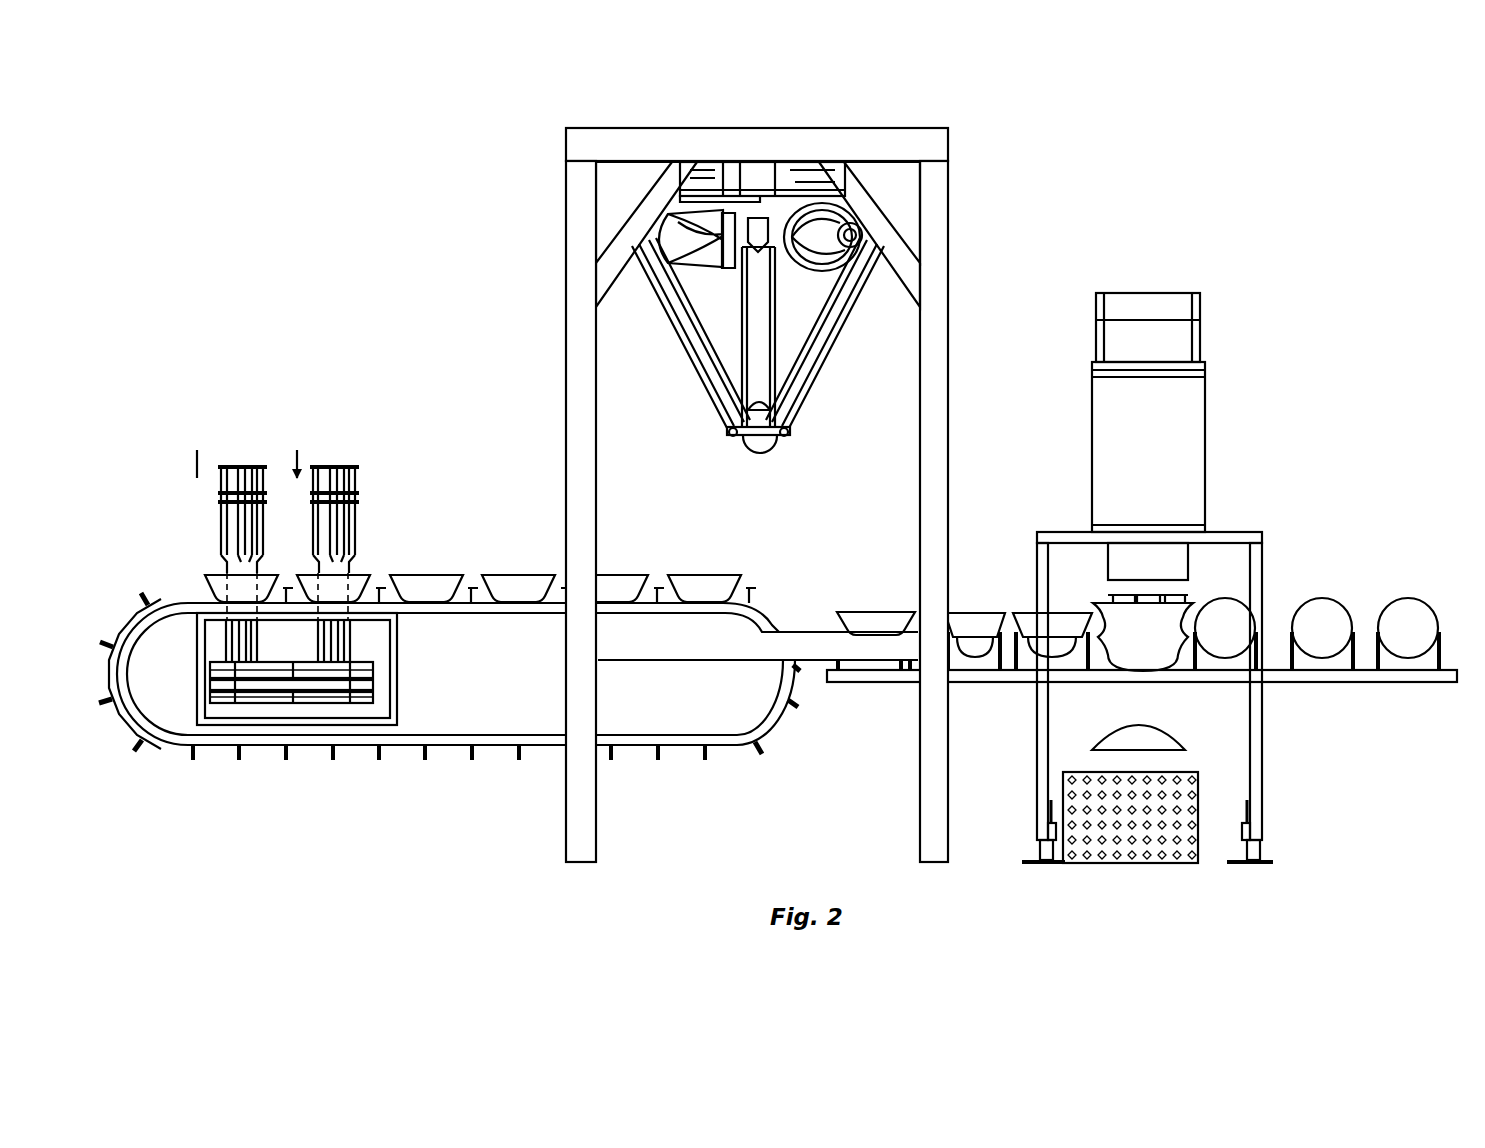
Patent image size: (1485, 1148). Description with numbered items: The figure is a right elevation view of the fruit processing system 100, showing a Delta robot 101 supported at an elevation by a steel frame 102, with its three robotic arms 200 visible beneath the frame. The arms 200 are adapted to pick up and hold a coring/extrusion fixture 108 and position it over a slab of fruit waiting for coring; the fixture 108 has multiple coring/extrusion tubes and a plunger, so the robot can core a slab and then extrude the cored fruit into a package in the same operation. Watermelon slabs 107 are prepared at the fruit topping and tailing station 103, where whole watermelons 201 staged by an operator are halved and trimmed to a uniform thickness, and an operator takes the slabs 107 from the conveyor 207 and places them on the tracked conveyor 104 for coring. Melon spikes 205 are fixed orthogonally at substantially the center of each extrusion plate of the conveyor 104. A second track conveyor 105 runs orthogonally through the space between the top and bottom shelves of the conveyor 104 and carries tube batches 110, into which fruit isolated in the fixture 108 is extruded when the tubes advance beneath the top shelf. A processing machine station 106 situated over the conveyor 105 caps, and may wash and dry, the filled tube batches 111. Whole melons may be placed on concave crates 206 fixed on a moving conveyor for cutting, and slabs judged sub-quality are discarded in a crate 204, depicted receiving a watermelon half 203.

The fruit processing system 100 is at (1086, 172).
The Delta robot 101 is at (769, 128).
The steel frame 102 is at (563, 296).
The fruit topping and tailing station 103 is at (1200, 388).
The tracked conveyor 104 is at (542, 748).
The second track conveyor 105 is at (333, 712).
The processing machine station 106 is at (197, 620).
The watermelon slabs 107 is at (1040, 612).
The coring/extrusion fixture 108 is at (334, 460).
The tube batches 110 is at (362, 638).
The tube batches filled with fruit 111 is at (362, 638).
The arms 200 is at (683, 370).
The whole watermelons 201 is at (1408, 597).
The watermelon half 203 is at (1135, 717).
The crate 204 is at (1090, 772).
The melon spikes 205 is at (800, 707).
The concave crates 206 is at (1387, 684).
The conveyor 207 is at (1273, 684).